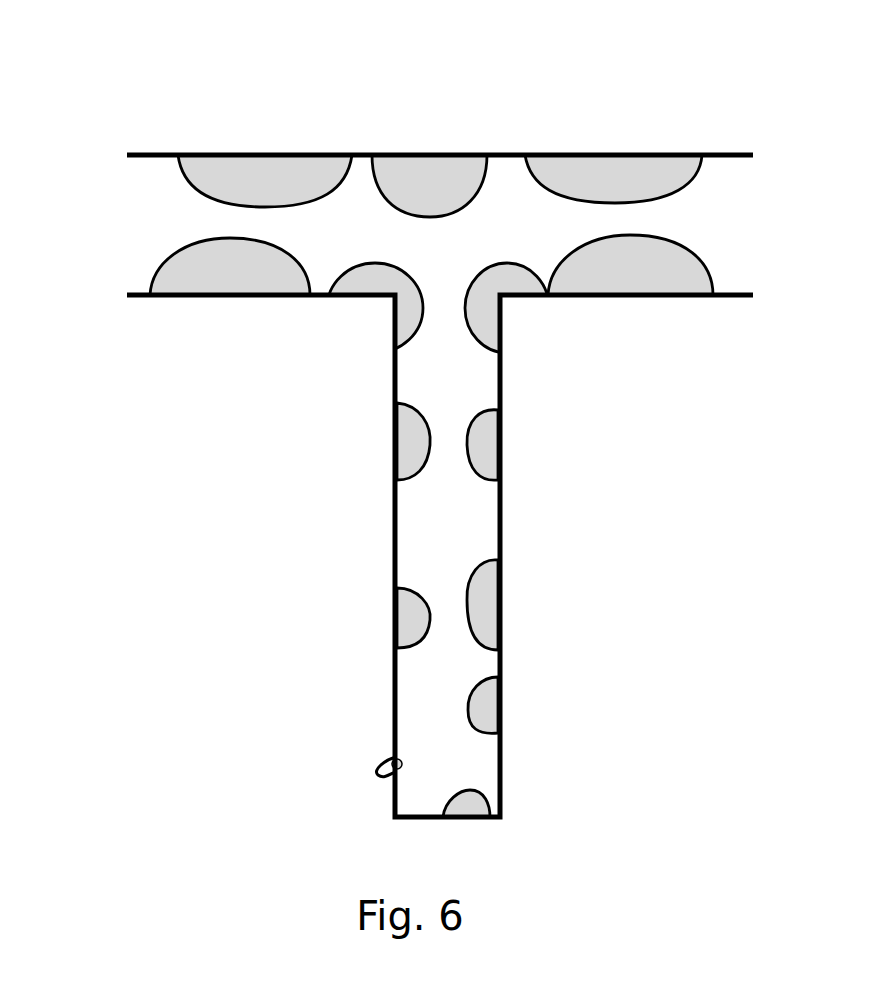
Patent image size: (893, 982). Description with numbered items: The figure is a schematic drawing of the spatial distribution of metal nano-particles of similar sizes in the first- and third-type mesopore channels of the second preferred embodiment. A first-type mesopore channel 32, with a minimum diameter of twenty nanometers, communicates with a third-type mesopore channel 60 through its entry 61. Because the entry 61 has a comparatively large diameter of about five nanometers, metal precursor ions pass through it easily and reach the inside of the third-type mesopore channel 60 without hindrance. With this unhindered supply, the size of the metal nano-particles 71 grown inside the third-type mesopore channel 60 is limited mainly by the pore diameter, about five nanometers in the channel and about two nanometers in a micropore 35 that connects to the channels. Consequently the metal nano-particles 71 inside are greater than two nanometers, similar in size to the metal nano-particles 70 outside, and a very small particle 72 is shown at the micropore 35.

The first-type mesopore channel 32 is at (128, 232).
The micropore 35 is at (360, 768).
The third-type mesopore channel 60 is at (470, 528).
The entry of the third-type mesopore channel 61 is at (450, 285).
The metal nano-particles outside 70 is at (292, 172).
The metal nano-particles inside the third-type mesopore channel 71 is at (486, 325).
The fine particle 72 is at (406, 765).